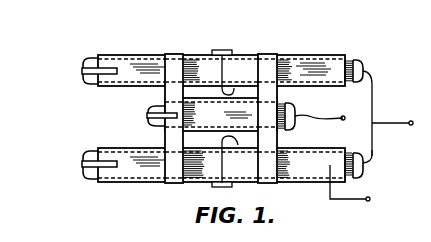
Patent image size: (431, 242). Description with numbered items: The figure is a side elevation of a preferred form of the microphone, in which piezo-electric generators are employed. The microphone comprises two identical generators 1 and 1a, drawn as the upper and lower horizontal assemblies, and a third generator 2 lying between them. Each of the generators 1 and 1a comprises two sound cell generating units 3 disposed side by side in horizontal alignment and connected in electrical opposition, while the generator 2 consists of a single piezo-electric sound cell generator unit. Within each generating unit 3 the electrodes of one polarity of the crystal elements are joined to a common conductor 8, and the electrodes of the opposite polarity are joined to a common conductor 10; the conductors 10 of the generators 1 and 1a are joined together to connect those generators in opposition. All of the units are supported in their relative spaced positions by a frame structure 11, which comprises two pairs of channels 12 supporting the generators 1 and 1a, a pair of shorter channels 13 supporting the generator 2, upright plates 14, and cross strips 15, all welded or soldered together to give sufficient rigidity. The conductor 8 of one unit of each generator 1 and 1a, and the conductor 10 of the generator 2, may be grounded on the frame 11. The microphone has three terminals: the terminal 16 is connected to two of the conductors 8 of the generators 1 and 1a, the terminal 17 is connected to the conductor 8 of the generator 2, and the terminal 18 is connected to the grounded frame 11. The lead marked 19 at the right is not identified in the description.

The generator 1 is at (98, 55).
The generator 1a is at (108, 182).
The third generator 2 is at (147, 108).
The sound cell generating unit 3 is at (350, 58).
The common conductor 8 is at (82, 71).
The common conductor 10 is at (234, 88).
The frame structure 11 is at (155, 54).
The channels 12 is at (316, 55).
The shorter channels 13 is at (221, 114).
The upright plates 14 is at (173, 60).
The cross strips 15 is at (223, 50).
The terminal 16 is at (411, 121).
The terminal 17 is at (343, 120).
The terminal 18 is at (370, 202).
The connecting lead 19 is at (398, 156).